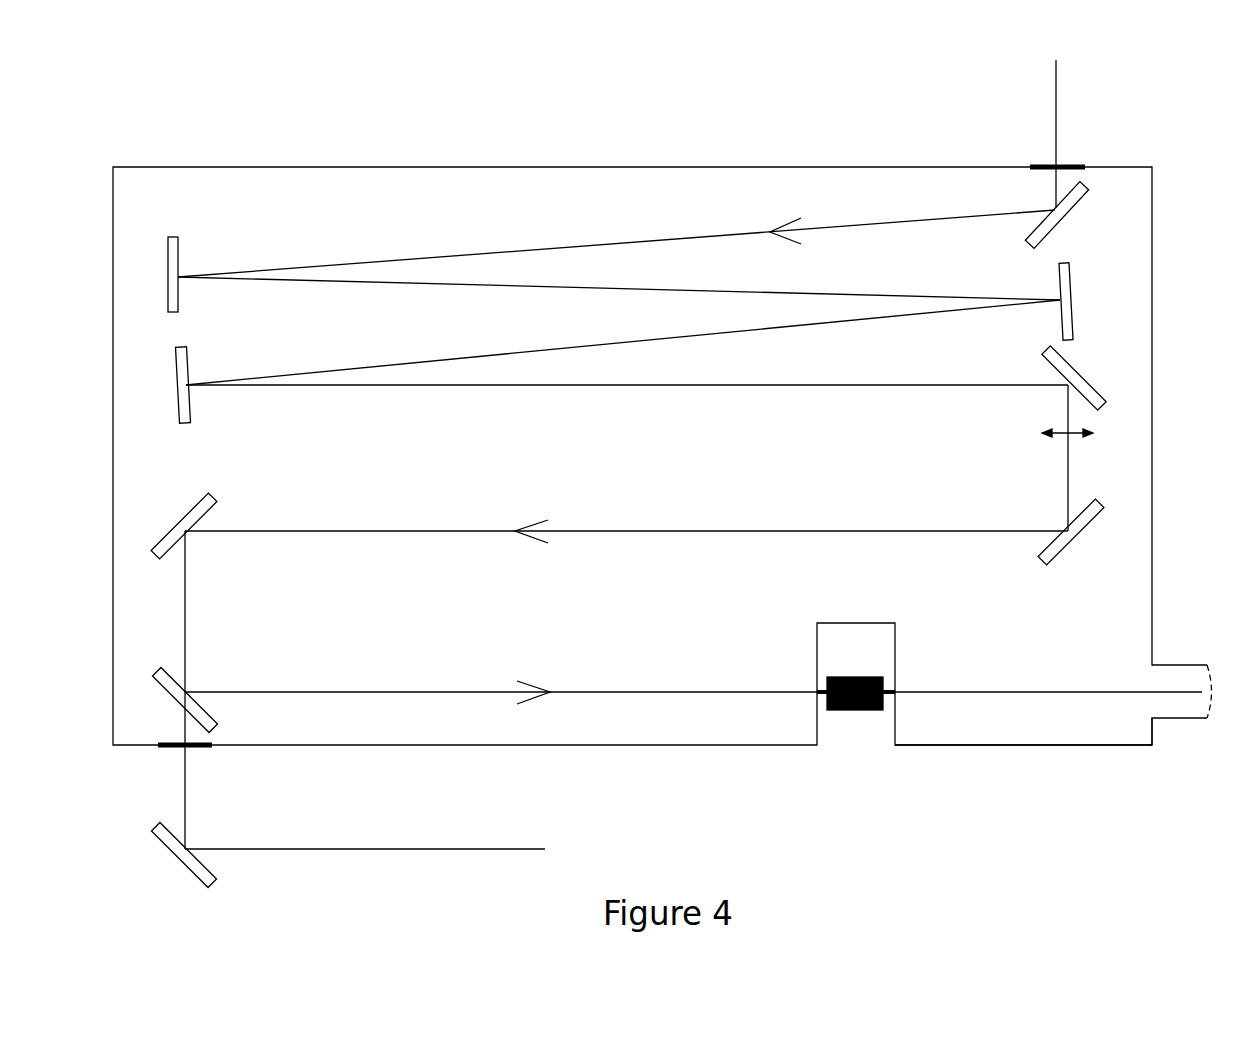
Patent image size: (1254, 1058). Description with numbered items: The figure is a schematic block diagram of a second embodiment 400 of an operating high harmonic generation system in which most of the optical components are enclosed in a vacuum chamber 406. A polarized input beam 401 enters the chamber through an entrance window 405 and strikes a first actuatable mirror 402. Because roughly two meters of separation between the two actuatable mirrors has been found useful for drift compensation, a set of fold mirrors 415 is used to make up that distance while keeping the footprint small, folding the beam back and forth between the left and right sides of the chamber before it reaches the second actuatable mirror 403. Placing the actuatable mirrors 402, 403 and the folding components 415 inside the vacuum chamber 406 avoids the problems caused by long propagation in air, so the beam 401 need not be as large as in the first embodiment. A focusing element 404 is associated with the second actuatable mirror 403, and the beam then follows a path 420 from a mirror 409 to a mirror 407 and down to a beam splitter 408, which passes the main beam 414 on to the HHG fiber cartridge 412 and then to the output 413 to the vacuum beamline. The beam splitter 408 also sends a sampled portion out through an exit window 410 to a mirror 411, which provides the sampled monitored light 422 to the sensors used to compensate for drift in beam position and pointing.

The second embodiment of HHG system 400 is at (668, 39).
The input beam 401 is at (616, 231).
The actuatable mirror 402 is at (1081, 215).
The actuatable mirror 403 is at (659, 438).
The focusing element 404 is at (1093, 437).
The entrance window 405 is at (1085, 134).
The vacuum chamber 406 is at (1023, 750).
The mirror 407 is at (174, 671).
The beam splitter 408 is at (171, 686).
The mirror 409 is at (1083, 532).
The exit window 410 is at (206, 761).
The mirror 411 is at (178, 858).
The HHG fiber cartridge 412 is at (856, 673).
The output to vacuum beamline 413 is at (1205, 677).
The output beam 414 is at (693, 682).
The fold mirrors 415 is at (625, 330).
The beam path 420 is at (626, 523).
The sampled monitored light 422 is at (365, 866).